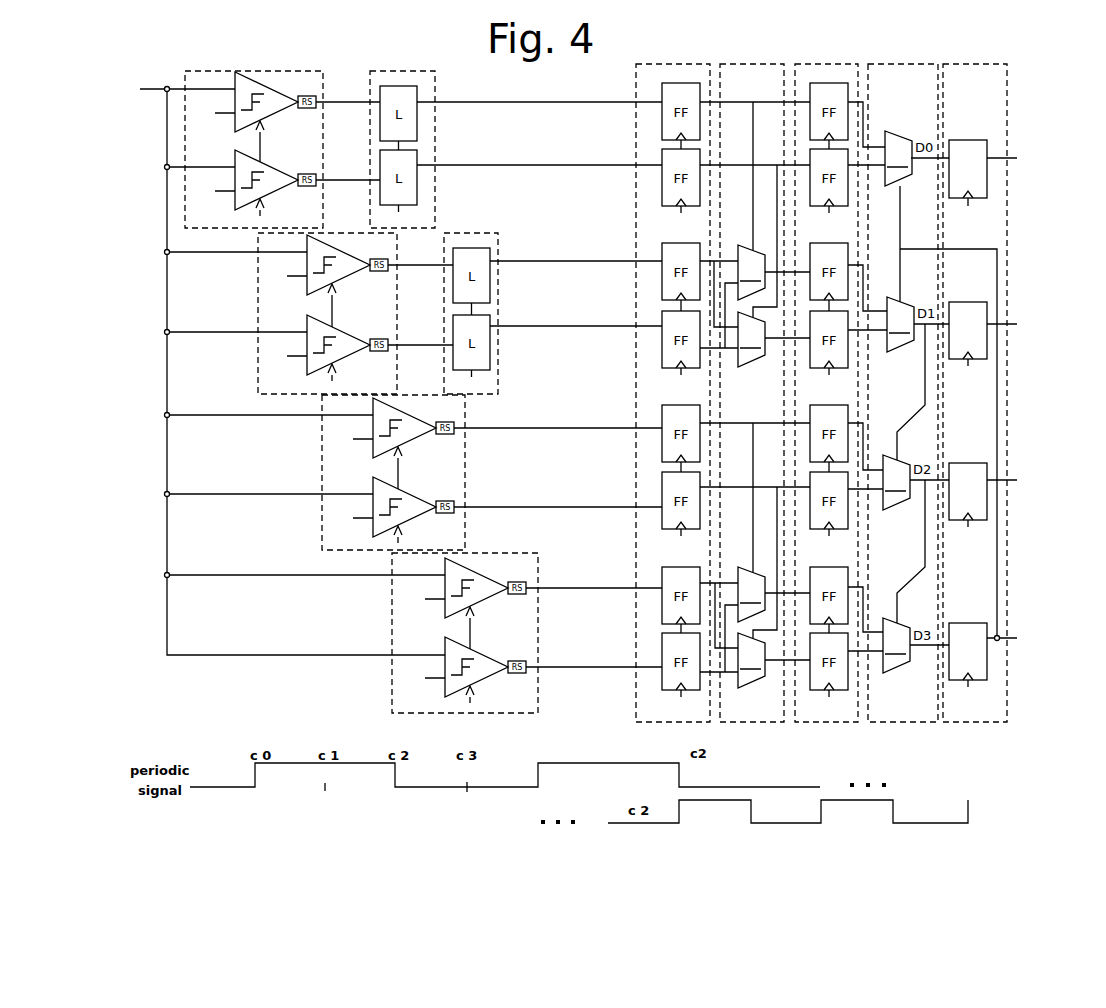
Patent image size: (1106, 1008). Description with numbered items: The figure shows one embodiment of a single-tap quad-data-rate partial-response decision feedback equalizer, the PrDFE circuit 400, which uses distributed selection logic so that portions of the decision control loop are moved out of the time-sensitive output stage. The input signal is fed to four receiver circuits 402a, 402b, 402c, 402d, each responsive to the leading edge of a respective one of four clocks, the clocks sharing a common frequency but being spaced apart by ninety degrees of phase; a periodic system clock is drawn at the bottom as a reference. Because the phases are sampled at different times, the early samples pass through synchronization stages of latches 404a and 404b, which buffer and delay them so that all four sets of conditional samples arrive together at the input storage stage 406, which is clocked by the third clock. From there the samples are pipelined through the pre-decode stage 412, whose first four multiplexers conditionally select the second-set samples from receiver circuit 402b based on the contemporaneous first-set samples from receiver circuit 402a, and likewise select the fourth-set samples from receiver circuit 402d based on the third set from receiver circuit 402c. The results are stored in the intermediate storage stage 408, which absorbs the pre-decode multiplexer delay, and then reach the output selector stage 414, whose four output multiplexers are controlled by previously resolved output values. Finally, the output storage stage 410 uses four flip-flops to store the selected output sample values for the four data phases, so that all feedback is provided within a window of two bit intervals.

The PrDFE circuit 400 is at (116, 112).
The receiver circuit 402a is at (176, 224).
The receiver circuit 402b is at (258, 378).
The receiver circuit 402c is at (312, 534).
The receiver circuit 402d is at (388, 668).
The latch 404a is at (437, 158).
The latch 404b is at (500, 246).
The input storage stage 406 is at (618, 224).
The intermediate storage stage 408 is at (820, 62).
The output storage stage 410 is at (1010, 97).
The pre-decode stage 412 is at (760, 61).
The output selector stage 414 is at (905, 64).